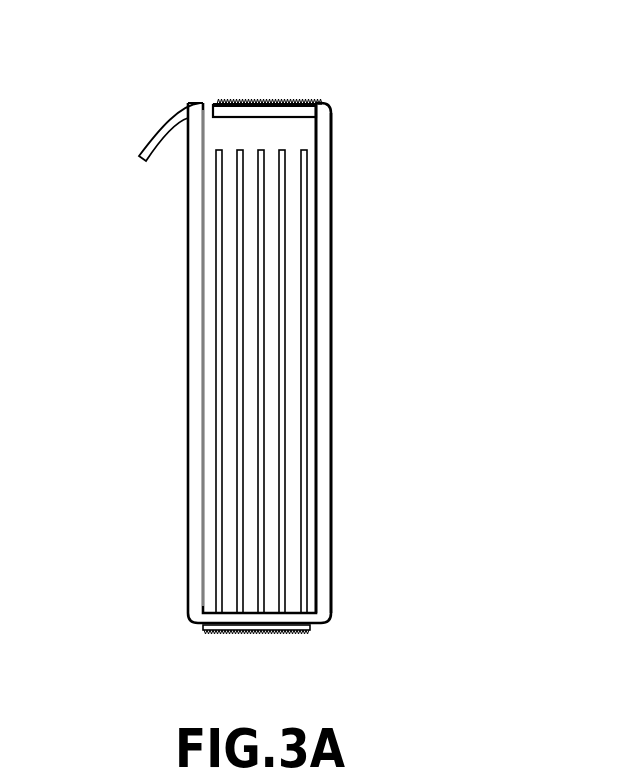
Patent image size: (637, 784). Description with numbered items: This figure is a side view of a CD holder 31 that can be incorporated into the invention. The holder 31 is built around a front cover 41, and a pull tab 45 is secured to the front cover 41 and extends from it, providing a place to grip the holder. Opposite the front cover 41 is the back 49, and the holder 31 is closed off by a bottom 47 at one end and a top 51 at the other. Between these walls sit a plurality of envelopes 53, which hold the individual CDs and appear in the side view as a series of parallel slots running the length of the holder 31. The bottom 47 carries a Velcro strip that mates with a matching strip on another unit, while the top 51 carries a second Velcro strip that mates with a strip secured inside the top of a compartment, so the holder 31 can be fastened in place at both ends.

The CD holder 31 is at (282, 333).
The front cover 41 is at (188, 443).
The pull tab 45 is at (143, 150).
The bottom 47 is at (321, 627).
The back 49 is at (331, 448).
The top 51 is at (255, 100).
The envelopes 53 is at (303, 348).